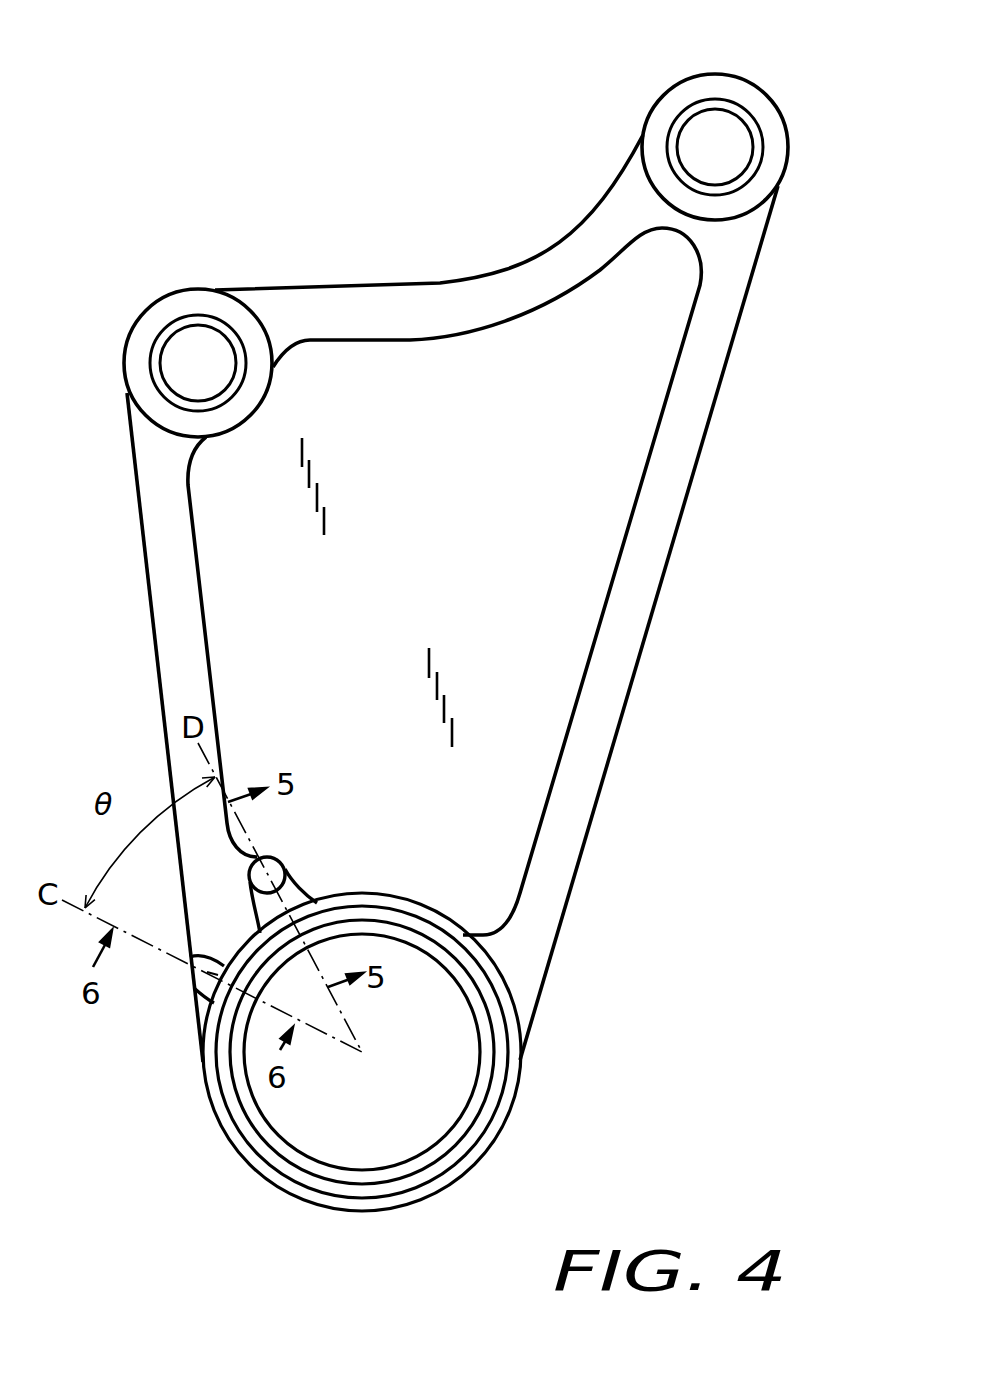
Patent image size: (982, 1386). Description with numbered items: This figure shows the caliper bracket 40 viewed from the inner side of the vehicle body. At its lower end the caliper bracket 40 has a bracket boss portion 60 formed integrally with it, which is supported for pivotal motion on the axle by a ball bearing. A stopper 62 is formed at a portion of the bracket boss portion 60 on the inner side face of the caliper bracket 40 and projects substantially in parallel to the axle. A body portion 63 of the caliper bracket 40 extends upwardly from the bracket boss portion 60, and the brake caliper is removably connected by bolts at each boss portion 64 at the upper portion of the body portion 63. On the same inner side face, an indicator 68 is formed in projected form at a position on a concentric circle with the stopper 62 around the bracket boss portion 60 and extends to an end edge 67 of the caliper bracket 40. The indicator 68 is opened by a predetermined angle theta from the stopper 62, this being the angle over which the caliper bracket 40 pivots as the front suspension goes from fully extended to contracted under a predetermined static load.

The caliper bracket 40 is at (712, 499).
The bracket boss portion 60 is at (362, 1178).
The stopper 62 is at (284, 862).
The body portion 63 is at (223, 596).
The boss portion 64 is at (178, 305).
The end edge 67 is at (157, 685).
The indicator 68 is at (193, 990).